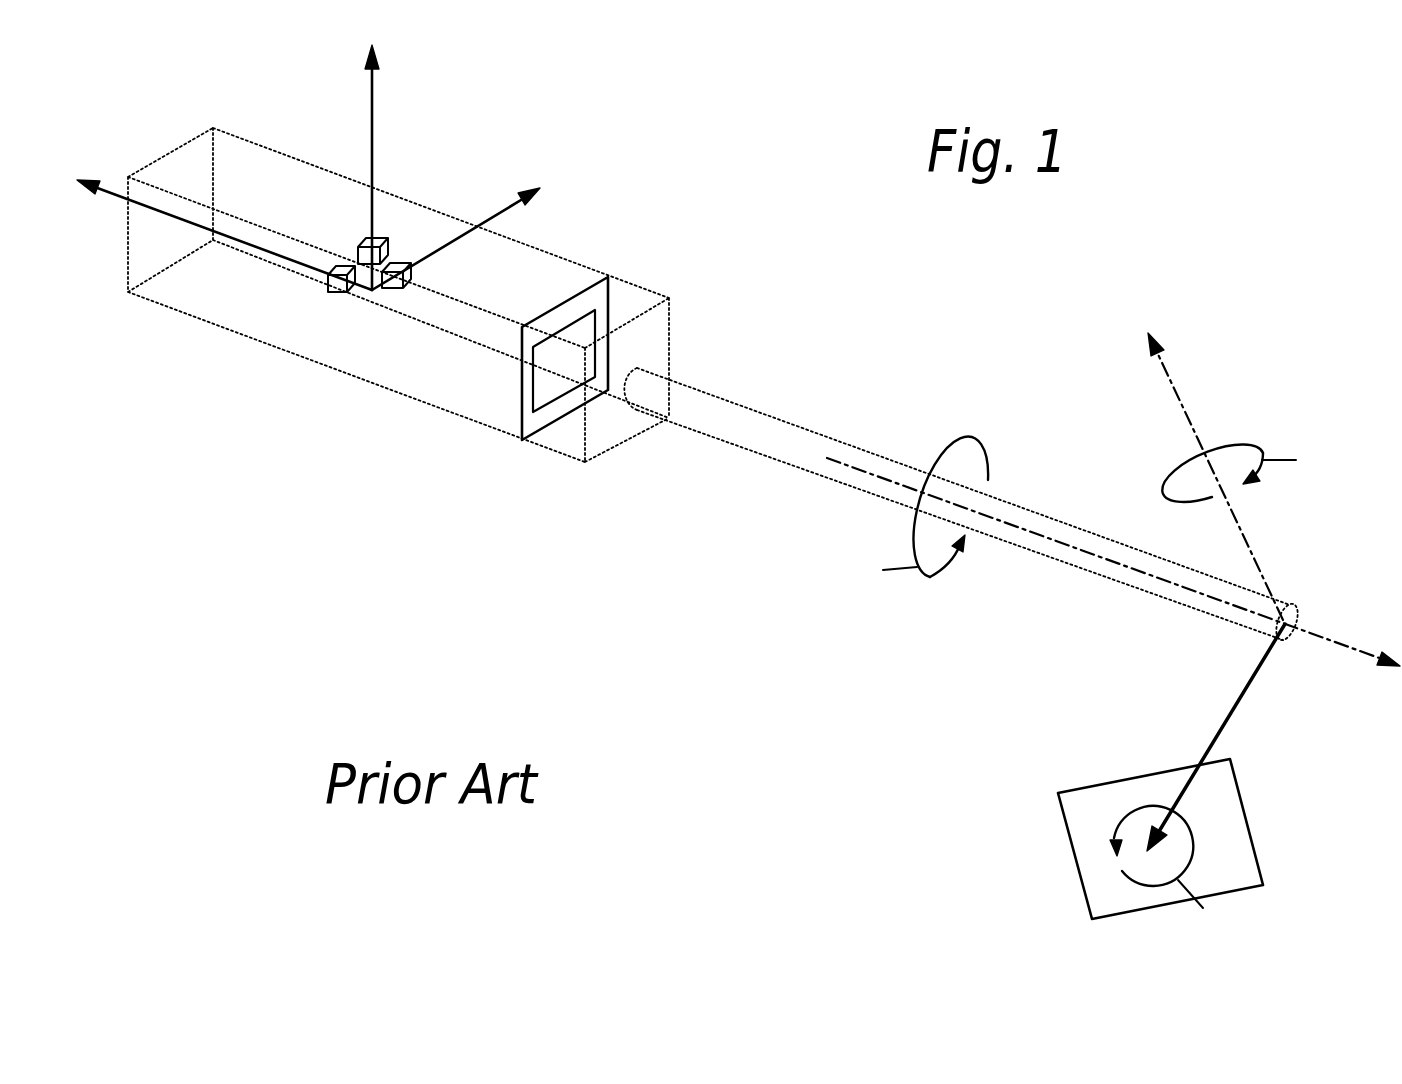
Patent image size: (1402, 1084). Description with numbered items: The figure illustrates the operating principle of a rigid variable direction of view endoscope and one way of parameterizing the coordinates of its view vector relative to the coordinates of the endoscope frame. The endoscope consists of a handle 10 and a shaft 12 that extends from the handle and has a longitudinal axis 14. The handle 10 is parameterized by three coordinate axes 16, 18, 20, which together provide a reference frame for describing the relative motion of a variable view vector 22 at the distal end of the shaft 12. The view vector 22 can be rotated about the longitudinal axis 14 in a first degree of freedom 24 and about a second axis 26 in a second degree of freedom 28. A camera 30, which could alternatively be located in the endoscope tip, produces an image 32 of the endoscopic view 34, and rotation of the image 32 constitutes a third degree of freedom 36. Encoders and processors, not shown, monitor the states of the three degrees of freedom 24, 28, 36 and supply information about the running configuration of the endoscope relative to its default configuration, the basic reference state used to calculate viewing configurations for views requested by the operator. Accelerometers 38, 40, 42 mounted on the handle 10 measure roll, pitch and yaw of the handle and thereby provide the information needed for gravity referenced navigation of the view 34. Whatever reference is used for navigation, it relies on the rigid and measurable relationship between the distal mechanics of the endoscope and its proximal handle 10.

The handle 10 is at (188, 305).
The shaft 12 is at (727, 443).
The longitudinal axis 14 is at (852, 471).
The coordinate axis 16 is at (497, 212).
The coordinate axis 18 is at (110, 195).
The coordinate axis 20 is at (372, 115).
The view vector 22 is at (1247, 697).
The first degree of freedom 24 is at (933, 580).
The second axis 26 is at (1197, 428).
The second degree of freedom 28 is at (1165, 488).
The camera 30 is at (600, 292).
The image 32 is at (545, 410).
The endoscopic view 34 is at (1065, 845).
The third degree of freedom 36 is at (1152, 885).
The accelerometer 38 is at (403, 266).
The accelerometer 40 is at (345, 294).
The accelerometer 42 is at (362, 243).